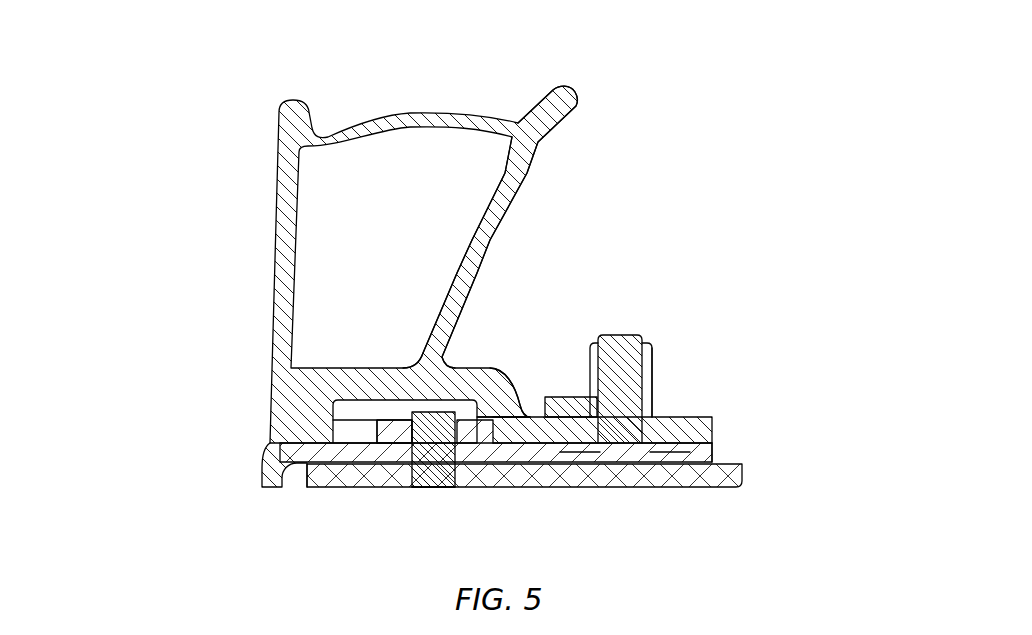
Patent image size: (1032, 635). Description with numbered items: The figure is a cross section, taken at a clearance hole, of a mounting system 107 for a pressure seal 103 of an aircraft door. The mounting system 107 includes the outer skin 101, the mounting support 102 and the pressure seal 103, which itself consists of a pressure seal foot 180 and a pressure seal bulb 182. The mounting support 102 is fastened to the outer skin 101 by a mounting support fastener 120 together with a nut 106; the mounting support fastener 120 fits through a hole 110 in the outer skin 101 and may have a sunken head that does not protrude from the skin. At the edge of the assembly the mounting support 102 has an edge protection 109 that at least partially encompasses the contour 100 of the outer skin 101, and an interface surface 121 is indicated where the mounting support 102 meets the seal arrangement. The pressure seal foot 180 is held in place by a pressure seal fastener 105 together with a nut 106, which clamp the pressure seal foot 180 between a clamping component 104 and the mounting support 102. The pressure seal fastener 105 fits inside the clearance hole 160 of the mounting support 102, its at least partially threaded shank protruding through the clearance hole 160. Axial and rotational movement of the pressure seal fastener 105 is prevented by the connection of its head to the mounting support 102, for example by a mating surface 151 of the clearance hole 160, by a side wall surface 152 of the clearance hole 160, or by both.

The mounting system 107 is at (214, 142).
The pressure seal bulb 182 is at (283, 268).
The pressure seal 103 is at (563, 98).
The interface surface 121 is at (519, 437).
The edge protection 109 is at (270, 453).
The nut 106 is at (385, 428).
The pressure seal fastener 105 is at (617, 349).
The clamping component 104 is at (653, 407).
The pressure seal foot 180 is at (700, 428).
The clearance hole 160 is at (597, 443).
The side wall surface of clearance hole 152 is at (575, 453).
The mating surface of clearance hole 151 is at (657, 452).
The mounting support 102 is at (712, 448).
The outer skin 101 is at (742, 468).
The contour 100 is at (304, 474).
The mounting support fastener 120 is at (432, 469).
The hole 110 is at (457, 463).